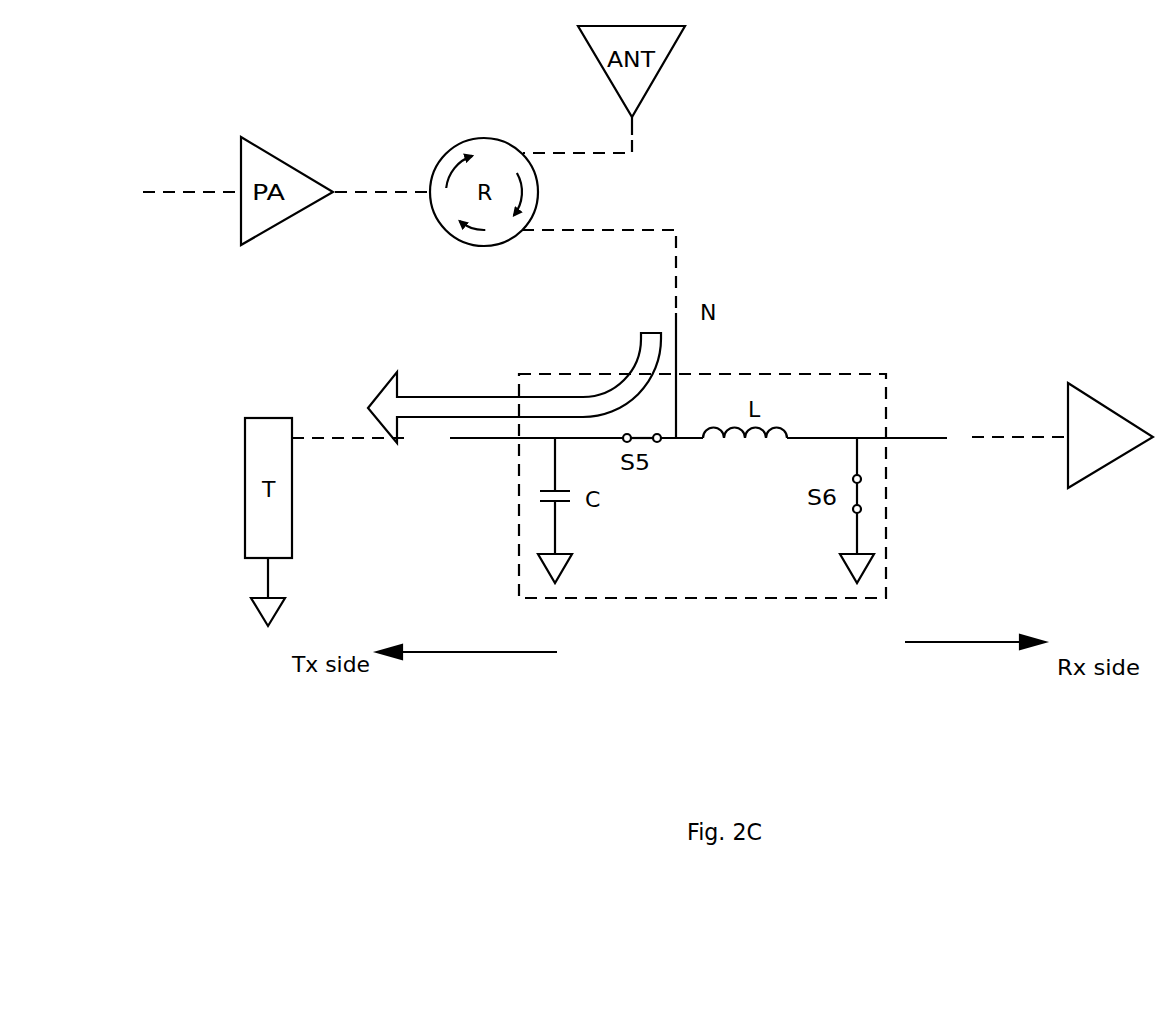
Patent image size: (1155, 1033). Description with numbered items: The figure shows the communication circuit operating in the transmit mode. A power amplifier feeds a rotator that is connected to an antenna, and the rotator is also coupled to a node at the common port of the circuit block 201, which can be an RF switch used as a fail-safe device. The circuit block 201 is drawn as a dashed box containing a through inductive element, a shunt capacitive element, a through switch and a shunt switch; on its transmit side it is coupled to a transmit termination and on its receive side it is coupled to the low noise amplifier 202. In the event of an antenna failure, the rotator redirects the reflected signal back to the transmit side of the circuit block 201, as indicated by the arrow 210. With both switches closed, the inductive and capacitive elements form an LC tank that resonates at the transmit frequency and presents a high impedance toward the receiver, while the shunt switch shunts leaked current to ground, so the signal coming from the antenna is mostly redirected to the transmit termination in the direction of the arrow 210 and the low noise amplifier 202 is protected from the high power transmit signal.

The circuit block 201 is at (810, 374).
The arrow 210 is at (397, 372).
The LNA 202 is at (1080, 383).